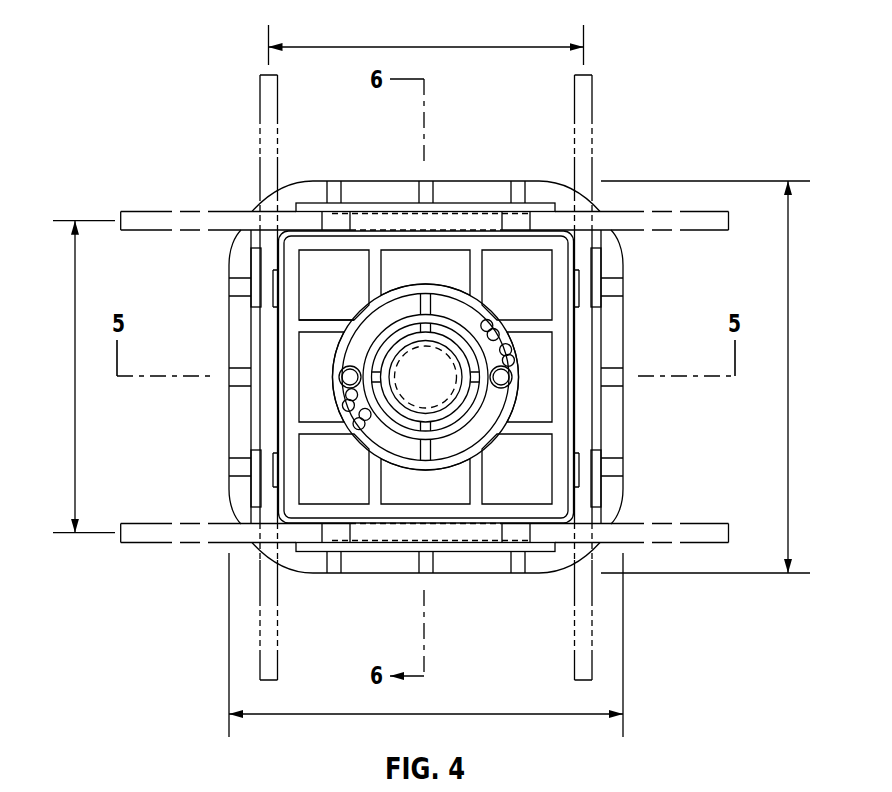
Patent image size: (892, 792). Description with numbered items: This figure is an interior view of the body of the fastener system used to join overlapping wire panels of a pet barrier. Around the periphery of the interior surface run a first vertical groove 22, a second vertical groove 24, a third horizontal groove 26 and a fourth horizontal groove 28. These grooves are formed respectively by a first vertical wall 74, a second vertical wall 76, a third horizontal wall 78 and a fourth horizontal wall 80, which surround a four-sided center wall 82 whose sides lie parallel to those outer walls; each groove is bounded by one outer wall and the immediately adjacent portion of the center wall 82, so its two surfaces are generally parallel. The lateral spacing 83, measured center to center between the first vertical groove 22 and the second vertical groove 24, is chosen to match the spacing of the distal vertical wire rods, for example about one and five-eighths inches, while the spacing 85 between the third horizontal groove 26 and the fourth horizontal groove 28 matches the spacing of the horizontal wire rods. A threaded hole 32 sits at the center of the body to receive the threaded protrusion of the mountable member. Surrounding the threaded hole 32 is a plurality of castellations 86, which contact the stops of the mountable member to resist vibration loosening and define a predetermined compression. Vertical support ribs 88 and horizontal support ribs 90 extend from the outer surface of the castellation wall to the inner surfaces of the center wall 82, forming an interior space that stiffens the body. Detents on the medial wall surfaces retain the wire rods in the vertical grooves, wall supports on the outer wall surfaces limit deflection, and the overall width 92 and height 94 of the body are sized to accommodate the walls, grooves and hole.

The first vertical groove 22 is at (267, 403).
The second vertical groove 24 is at (583, 352).
The third horizontal groove 26 is at (416, 220).
The fourth horizontal groove 28 is at (456, 536).
The threaded hole 32 is at (435, 387).
The first vertical wall 74 is at (197, 377).
The second vertical wall 76 is at (649, 377).
The third horizontal wall 78 is at (467, 203).
The fourth horizontal wall 80 is at (487, 553).
The center wall 82 is at (421, 377).
The lateral spacing 83 is at (453, 47).
The spacing 85 is at (75, 363).
The castellations 86 is at (342, 400).
The vertical support ribs 88 is at (367, 267).
The horizontal support ribs 90 is at (318, 320).
The width 92 is at (468, 713).
The height 94 is at (790, 374).